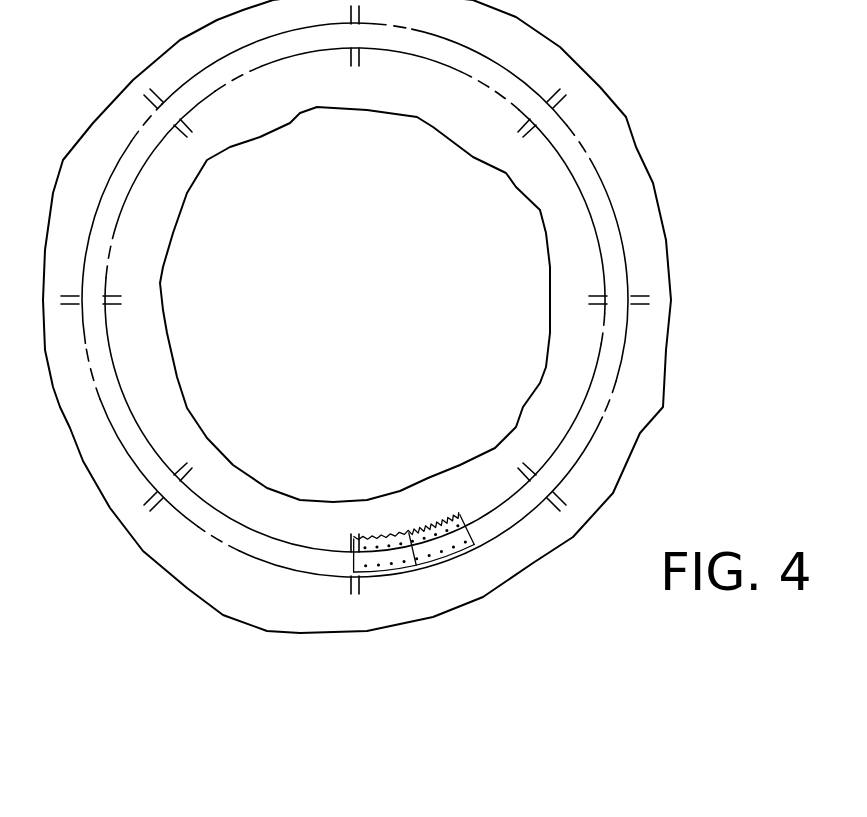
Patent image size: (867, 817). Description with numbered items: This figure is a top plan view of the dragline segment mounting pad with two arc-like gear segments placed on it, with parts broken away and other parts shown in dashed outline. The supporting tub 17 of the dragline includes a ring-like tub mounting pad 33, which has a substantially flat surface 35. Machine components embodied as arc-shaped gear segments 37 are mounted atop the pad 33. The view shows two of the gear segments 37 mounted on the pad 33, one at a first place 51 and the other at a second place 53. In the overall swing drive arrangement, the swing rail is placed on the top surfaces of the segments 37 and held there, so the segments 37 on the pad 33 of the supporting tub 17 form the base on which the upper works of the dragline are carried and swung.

The supporting tub 17 is at (526, 567).
The tub mounting pad 33 is at (267, 565).
The flat surface 35 is at (513, 513).
The gear segments 37 is at (440, 580).
The first place 51 is at (374, 512).
The second place 53 is at (428, 501).